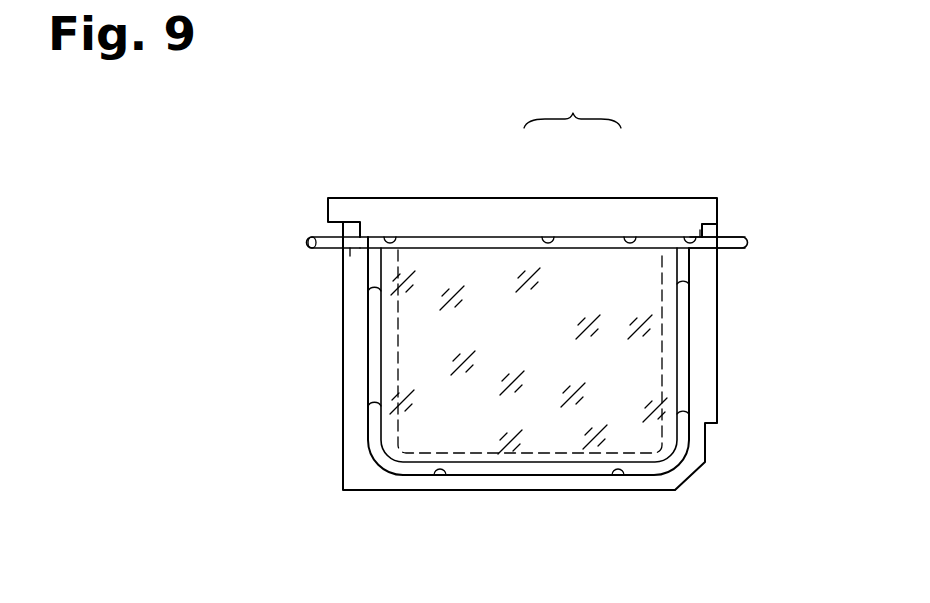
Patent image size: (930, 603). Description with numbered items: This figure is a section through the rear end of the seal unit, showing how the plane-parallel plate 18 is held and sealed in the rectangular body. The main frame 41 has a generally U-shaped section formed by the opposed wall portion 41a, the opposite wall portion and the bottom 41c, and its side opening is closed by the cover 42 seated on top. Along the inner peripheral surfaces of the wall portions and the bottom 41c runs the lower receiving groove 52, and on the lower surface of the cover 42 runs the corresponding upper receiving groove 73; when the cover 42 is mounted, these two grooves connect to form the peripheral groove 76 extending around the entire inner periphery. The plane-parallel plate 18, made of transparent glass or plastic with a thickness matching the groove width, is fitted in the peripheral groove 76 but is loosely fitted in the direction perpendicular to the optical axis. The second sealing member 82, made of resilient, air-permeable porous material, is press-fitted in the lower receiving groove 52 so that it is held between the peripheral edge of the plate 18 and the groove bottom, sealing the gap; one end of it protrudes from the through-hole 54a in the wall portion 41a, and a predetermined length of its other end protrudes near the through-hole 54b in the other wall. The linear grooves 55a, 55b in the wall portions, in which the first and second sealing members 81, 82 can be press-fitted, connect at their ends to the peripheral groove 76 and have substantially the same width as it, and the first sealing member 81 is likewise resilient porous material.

The plane-parallel plate 18 is at (637, 432).
The main frame 41 is at (722, 384).
The opposed wall portion 41a is at (704, 340).
The bottom 41c is at (593, 484).
The cover 42 is at (638, 196).
The lower receiving groove 52 is at (688, 385).
The through-hole 54a is at (719, 248).
The through-hole 54b is at (336, 248).
The linear groove 55a is at (700, 237).
The linear groove 55b is at (351, 249).
The upper receiving groove 73 is at (549, 236).
The peripheral groove 76 is at (572, 106).
The first sealing member 81 is at (314, 240).
The second sealing member 82 is at (390, 237).